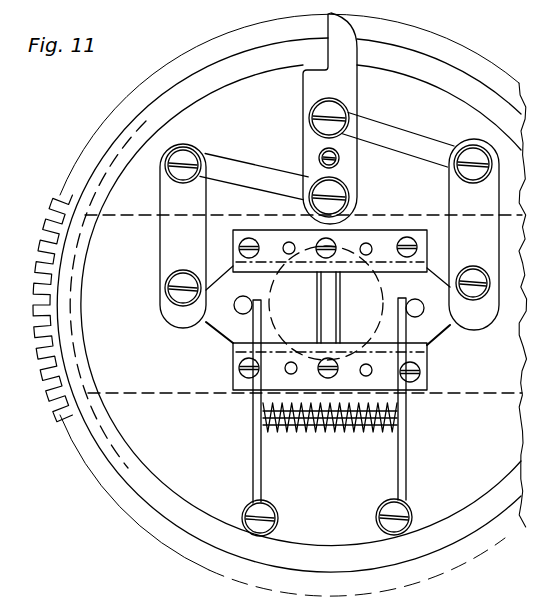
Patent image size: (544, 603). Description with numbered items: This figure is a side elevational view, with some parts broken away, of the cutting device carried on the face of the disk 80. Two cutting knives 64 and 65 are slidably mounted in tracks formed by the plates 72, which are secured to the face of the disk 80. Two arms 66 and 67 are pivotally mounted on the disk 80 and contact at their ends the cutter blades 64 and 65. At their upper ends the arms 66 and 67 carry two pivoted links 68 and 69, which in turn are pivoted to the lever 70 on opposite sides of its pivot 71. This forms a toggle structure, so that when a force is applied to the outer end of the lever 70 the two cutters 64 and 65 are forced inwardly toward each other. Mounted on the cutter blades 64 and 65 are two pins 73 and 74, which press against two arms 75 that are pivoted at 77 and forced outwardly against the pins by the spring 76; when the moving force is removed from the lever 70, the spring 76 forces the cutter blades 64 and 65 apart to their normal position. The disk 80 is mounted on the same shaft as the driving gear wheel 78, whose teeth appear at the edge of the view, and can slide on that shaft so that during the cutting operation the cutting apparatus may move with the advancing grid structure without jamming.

The cutting knife 64 is at (229, 343).
The cutting knife 65 is at (439, 333).
The arm 66 is at (162, 257).
The arm 67 is at (474, 234).
The link 68 is at (229, 170).
The link 69 is at (404, 139).
The lever 70 is at (299, 95).
The pivot 71 is at (311, 161).
The plates 72 is at (389, 233).
The pin 73 is at (233, 310).
The pin 74 is at (408, 308).
The arms 75 is at (329, 478).
The spring 76 is at (345, 442).
The pivot 77 is at (371, 520).
The driving gear wheel 78 is at (109, 507).
The disk 80 is at (291, 305).